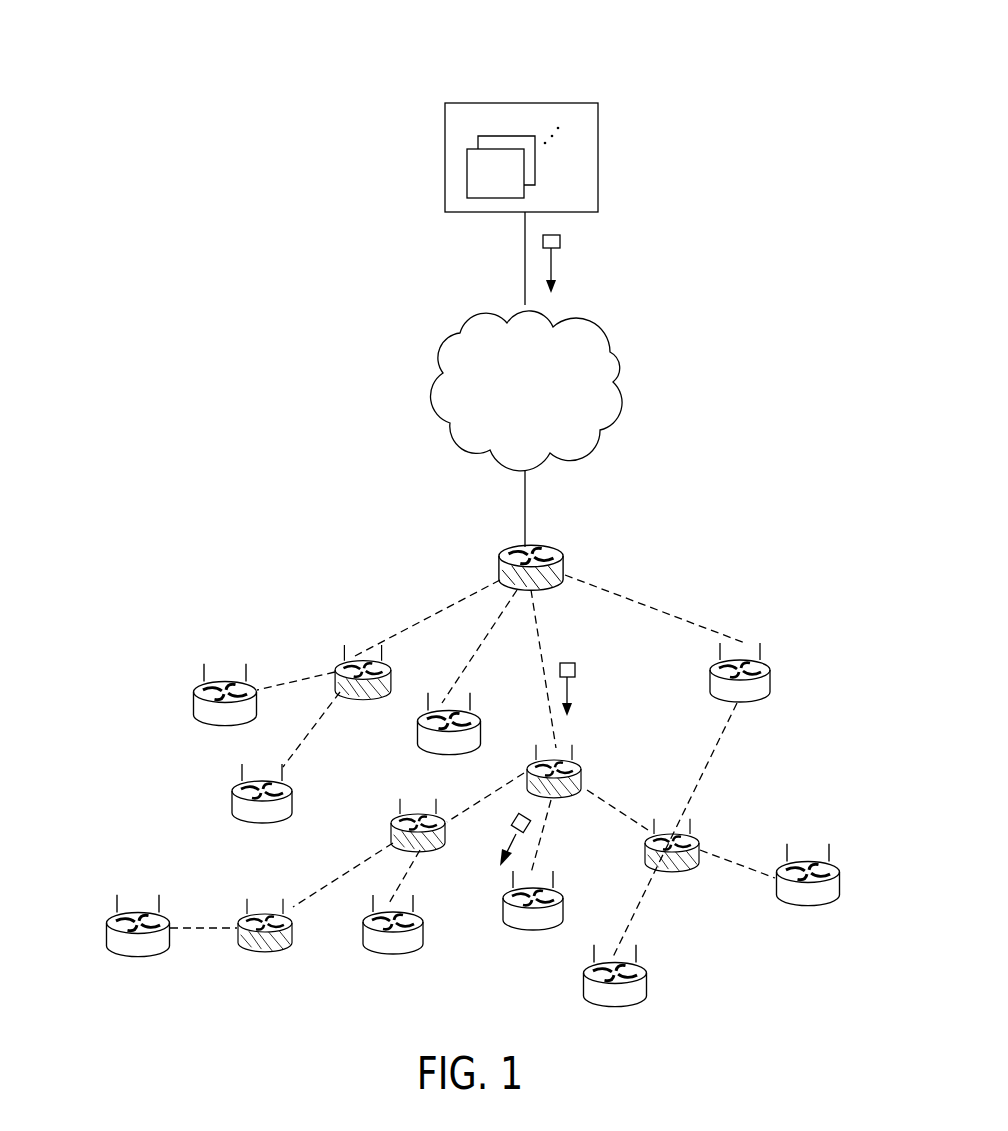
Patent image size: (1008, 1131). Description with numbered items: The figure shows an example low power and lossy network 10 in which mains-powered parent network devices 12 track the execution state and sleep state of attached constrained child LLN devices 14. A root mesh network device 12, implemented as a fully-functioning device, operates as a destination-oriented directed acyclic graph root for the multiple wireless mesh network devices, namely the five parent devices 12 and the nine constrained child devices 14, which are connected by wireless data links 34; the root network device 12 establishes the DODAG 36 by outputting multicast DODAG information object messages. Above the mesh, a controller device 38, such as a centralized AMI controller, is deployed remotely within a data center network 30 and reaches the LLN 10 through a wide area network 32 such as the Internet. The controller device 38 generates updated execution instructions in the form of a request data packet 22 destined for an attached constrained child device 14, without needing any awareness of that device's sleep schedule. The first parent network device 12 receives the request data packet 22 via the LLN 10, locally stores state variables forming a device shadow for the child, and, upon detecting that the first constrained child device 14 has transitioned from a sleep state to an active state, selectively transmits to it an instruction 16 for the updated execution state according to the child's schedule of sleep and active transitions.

The low power and lossy network 10 is at (752, 570).
The parent network device 12 is at (560, 556).
The constrained child LLN device 14 is at (213, 712).
The instruction 16 is at (513, 818).
The request data packet 22 is at (561, 241).
The data center network 30 is at (522, 103).
The wide area network 32 is at (620, 353).
The wireless data links 34 is at (420, 621).
The DODAG 36 is at (815, 615).
The controller device 38 is at (467, 175).